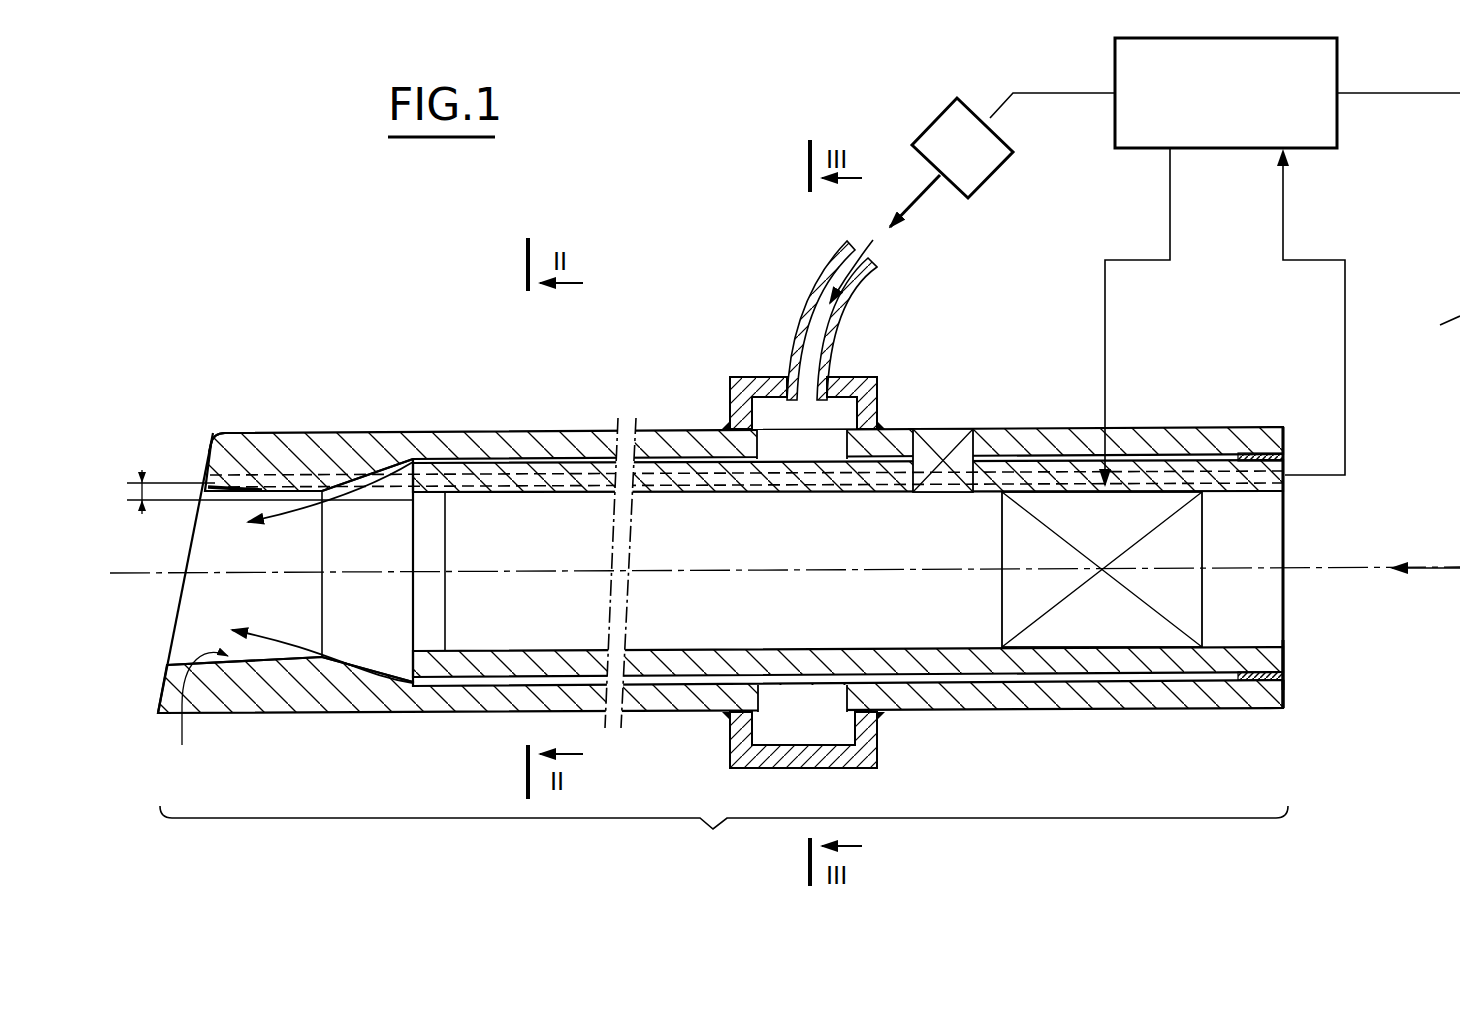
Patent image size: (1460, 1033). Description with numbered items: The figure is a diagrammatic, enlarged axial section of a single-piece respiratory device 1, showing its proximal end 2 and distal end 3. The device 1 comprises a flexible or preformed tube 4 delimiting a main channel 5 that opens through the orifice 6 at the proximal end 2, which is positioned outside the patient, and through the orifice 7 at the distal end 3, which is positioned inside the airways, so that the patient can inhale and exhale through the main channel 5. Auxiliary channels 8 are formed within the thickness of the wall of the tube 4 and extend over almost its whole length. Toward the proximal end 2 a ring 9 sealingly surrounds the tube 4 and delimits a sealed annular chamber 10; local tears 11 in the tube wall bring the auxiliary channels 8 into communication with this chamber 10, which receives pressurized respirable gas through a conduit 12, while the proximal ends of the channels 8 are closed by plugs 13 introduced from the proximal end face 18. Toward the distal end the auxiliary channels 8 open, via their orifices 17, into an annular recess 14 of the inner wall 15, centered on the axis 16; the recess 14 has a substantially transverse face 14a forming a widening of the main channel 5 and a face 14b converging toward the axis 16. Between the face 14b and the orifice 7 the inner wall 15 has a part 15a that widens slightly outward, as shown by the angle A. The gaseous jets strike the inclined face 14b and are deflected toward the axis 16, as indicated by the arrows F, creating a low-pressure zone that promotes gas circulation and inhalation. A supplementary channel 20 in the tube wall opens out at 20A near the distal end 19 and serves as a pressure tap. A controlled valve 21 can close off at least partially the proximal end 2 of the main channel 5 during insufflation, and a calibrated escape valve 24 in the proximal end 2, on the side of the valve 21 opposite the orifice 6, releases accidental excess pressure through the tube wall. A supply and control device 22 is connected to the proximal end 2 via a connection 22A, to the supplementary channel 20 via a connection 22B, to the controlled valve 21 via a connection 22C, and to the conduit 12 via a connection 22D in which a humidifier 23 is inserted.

The device 1 is at (724, 837).
The proximal end 2 is at (1300, 695).
The distal end 3 is at (286, 390).
The tube 4 is at (360, 432).
The main channel 5 is at (583, 520).
The orifice 6 is at (1285, 540).
The orifice 7 is at (175, 612).
The auxiliary channels 8 is at (652, 445).
The ring 9 is at (730, 390).
The annular chamber 10 is at (837, 733).
The local tears 11 is at (822, 443).
The conduit 12 is at (867, 295).
The plugs 13 is at (1262, 685).
The recess 14 is at (378, 652).
The face 14a is at (432, 653).
The face 14b is at (355, 480).
The inner wall 15 is at (540, 495).
The part 15a is at (198, 713).
The axis 16 is at (737, 572).
The orifices 17 is at (430, 445).
The proximal end face 18 is at (1285, 657).
The distal end 19 is at (210, 443).
The supplementary channel 20 is at (812, 493).
The opening of supplementary channel 20A is at (205, 487).
The controlled valve 21 is at (1100, 627).
The supply and control device 22 is at (1320, 63).
The connection 22A is at (1424, 327).
The connection 22B is at (1345, 277).
The connection 22C is at (1107, 322).
The connection 22D is at (1063, 92).
The humidifier 23 is at (935, 130).
The calibrated escape valve 24 is at (950, 437).
The angle A is at (157, 452).
The arrows F is at (295, 528).